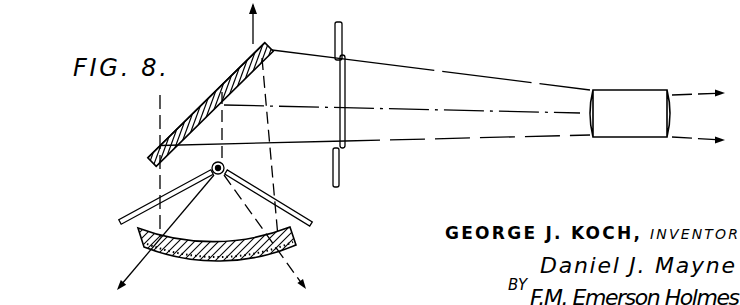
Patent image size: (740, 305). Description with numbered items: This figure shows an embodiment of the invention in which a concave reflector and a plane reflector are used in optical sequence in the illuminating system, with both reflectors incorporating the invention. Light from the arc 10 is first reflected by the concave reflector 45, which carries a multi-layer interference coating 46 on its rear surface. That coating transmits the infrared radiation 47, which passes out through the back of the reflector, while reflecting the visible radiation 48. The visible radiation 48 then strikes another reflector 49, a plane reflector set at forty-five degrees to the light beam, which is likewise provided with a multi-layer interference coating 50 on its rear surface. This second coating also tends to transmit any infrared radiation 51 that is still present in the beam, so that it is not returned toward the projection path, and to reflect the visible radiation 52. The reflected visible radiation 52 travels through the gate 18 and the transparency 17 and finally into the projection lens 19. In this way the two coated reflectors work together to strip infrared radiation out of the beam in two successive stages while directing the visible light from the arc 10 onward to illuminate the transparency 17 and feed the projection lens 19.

The arc 10 is at (227, 165).
The transparency 17 is at (345, 57).
The gate 18 is at (342, 25).
The projection lens 19 is at (613, 95).
The concave reflector 45 is at (297, 236).
The multi-layer interference coating 46 is at (233, 264).
The infrared radiation 47 is at (135, 274).
The visible radiation 48 is at (160, 180).
The reflector 49 is at (272, 46).
The multi-layer interference coating 50 is at (244, 62).
The infrared radiation 51 is at (160, 113).
The visible radiation 52 is at (313, 144).